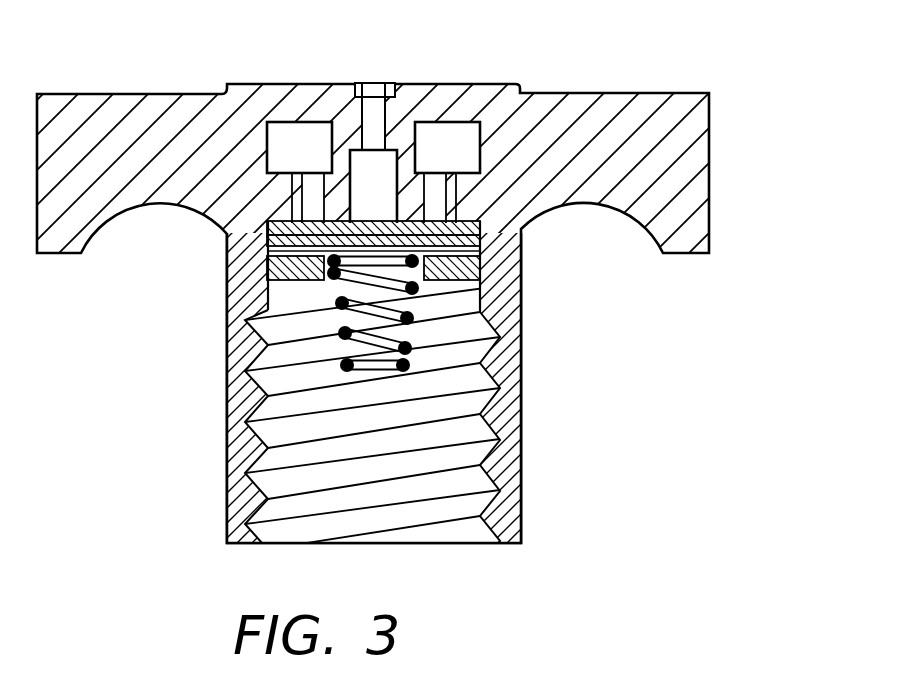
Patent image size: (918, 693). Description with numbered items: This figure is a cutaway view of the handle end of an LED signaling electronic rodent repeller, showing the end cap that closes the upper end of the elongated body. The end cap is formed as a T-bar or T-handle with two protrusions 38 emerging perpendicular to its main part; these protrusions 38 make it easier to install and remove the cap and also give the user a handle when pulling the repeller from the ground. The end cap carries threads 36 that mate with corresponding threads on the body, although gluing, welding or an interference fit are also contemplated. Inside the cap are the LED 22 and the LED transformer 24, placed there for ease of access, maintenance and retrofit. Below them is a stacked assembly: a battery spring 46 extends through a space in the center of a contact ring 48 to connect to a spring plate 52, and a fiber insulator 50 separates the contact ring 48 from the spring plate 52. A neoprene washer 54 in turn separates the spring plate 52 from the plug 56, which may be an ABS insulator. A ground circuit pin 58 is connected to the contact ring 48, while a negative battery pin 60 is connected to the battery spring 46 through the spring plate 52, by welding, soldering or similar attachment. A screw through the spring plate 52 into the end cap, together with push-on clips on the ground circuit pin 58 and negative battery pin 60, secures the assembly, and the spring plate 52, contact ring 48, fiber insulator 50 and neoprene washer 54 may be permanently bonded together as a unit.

The protrusions 38 is at (709, 168).
The threads 36 is at (478, 545).
The battery spring 46 is at (405, 366).
The contact ring 48 is at (474, 272).
The fiber insulator 50 is at (268, 263).
The spring plate 52 is at (478, 252).
The neoprene washer 54 is at (272, 239).
The plug 56 is at (469, 190).
The ground circuit pin 58 is at (312, 187).
The negative battery pin 60 is at (440, 190).
The LED transformer 24 is at (377, 168).
The LED 22 is at (387, 90).